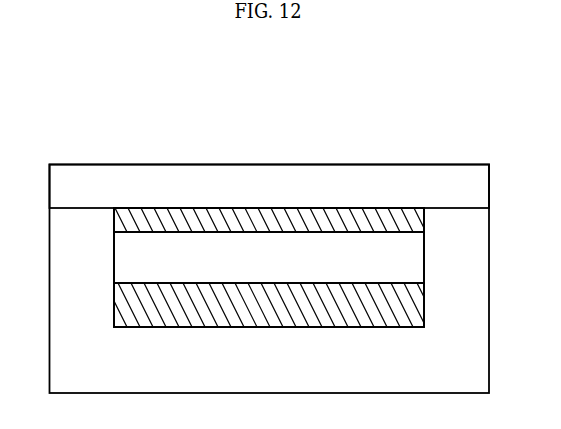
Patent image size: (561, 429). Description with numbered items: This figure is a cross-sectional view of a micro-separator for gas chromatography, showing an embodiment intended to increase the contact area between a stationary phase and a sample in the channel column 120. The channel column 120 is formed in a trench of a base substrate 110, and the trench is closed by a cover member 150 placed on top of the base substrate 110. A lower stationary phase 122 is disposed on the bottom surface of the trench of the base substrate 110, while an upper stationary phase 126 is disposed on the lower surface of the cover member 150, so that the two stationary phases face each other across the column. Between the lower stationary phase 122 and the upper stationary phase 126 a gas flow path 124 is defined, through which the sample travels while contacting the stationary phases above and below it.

The base substrate 110 is at (84, 228).
The cover member 150 is at (182, 183).
The channel column 120 is at (263, 91).
The lower stationary phase 122 is at (281, 290).
The gas flow path 124 is at (334, 263).
The upper stationary phase 126 is at (384, 215).